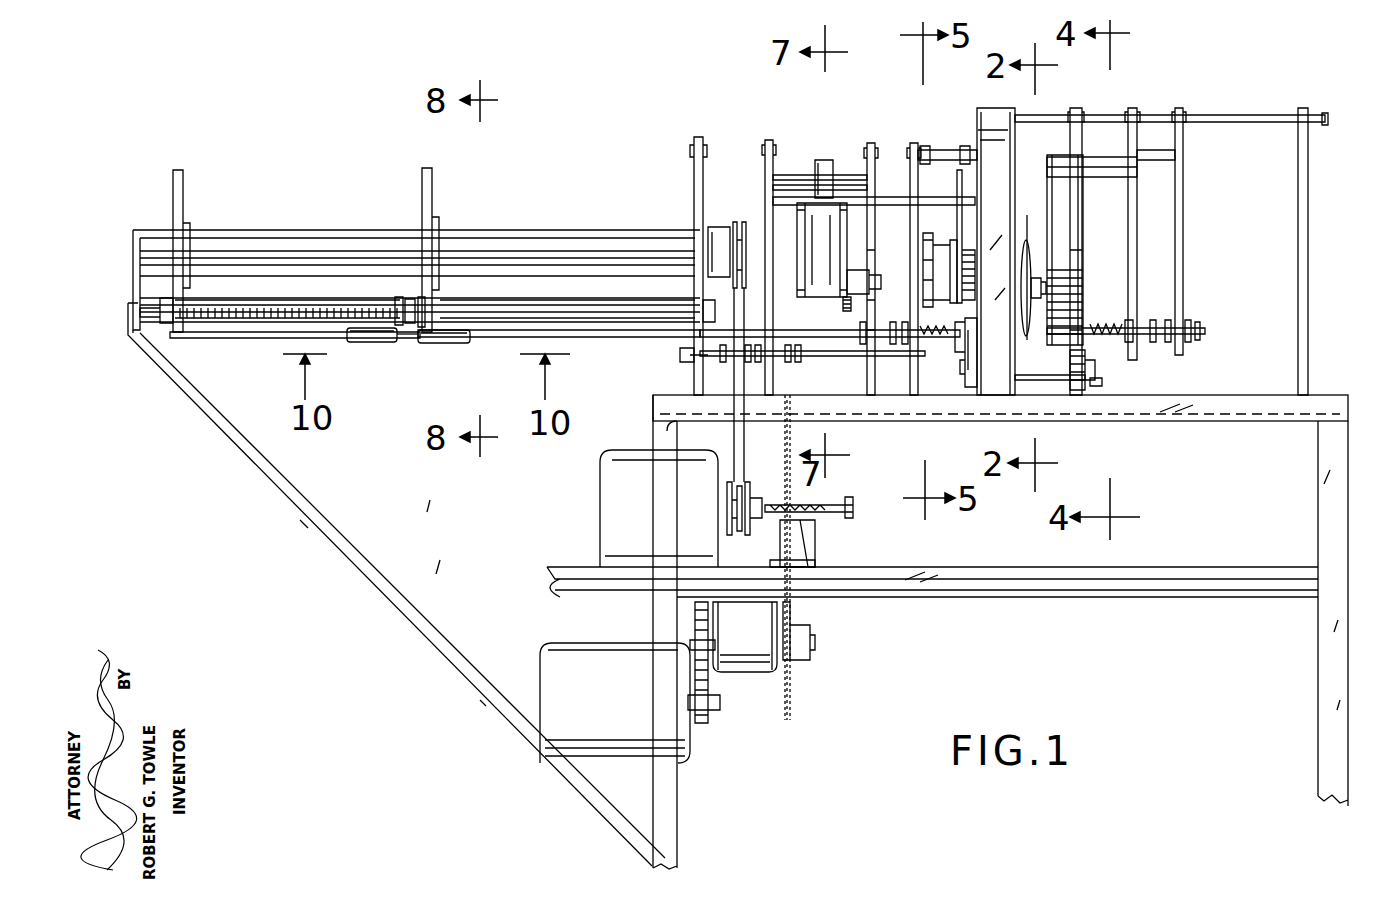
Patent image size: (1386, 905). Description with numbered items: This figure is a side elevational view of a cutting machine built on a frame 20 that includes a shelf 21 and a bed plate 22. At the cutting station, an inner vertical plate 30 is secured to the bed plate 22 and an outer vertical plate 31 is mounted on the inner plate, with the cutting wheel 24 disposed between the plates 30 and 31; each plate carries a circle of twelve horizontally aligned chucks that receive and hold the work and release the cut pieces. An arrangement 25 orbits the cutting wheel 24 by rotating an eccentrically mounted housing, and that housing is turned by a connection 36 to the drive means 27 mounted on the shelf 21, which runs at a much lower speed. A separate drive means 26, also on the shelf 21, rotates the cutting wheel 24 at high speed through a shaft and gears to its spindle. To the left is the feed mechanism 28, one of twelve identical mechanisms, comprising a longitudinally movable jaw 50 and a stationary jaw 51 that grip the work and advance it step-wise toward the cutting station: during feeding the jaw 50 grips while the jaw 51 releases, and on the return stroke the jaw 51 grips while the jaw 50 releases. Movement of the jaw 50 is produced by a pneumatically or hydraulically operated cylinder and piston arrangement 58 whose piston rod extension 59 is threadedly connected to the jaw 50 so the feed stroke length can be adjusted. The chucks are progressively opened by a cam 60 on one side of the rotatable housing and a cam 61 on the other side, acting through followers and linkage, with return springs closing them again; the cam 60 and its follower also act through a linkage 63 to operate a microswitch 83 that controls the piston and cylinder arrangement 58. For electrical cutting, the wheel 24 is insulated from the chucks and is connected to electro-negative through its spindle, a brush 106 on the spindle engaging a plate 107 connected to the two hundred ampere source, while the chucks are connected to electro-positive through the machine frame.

The frame 20 is at (392, 633).
The shelf 21 is at (1022, 598).
The bed plate 22 is at (1195, 414).
The cutting wheel 24 is at (1025, 232).
The arrangement for orbiting the cutting wheel 25 is at (925, 225).
The drive means 26 is at (590, 492).
The drive means 27 is at (748, 675).
The feed mechanism 28 is at (398, 372).
The inner vertical plate 30 is at (992, 120).
The outer vertical plate 31 is at (1078, 108).
The connection 36 is at (886, 190).
The longitudinally movable jaw 50 is at (372, 337).
The stationary jaw 51 is at (458, 342).
The cylinder and piston arrangement 58 is at (598, 325).
The piston rod extension 59 is at (246, 314).
The cam 60 is at (952, 160).
The cam 61 is at (966, 175).
The linkage 63 is at (833, 362).
The microswitch 83 is at (682, 358).
The brush 106 is at (849, 304).
The plate 107 is at (856, 262).